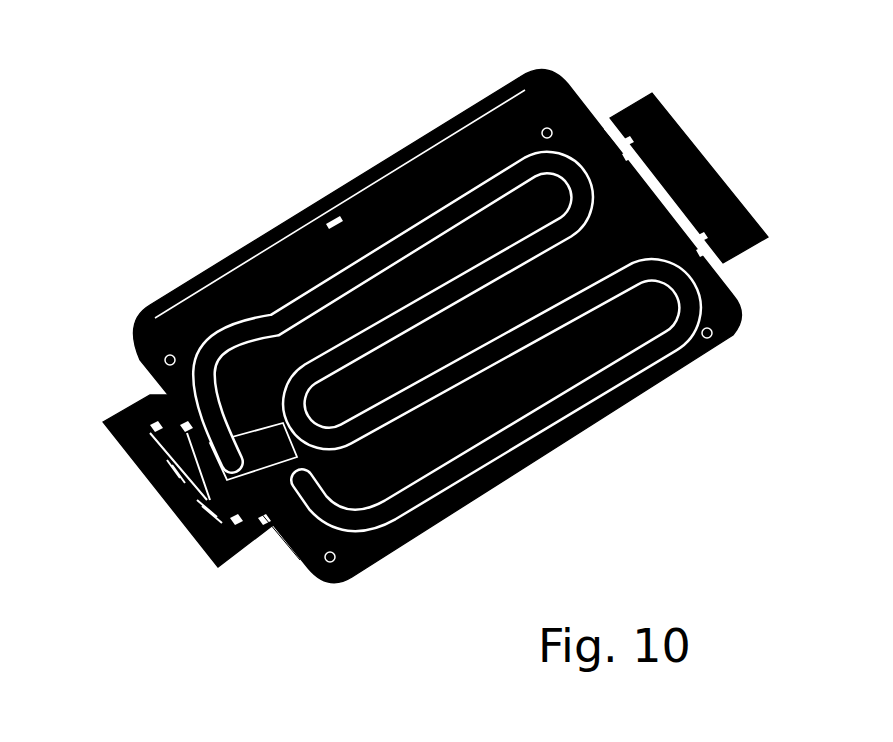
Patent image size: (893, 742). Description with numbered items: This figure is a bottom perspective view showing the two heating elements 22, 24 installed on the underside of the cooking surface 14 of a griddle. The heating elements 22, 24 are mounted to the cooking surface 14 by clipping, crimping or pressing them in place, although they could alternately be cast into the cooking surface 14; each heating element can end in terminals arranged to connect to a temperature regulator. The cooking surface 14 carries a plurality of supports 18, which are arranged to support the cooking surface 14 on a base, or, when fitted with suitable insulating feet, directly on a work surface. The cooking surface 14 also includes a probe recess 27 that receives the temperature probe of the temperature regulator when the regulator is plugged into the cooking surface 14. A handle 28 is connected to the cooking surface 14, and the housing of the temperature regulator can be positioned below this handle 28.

The cooking surface 14 is at (243, 247).
The supports 18 is at (567, 92).
The heating element 22 is at (472, 108).
The heating element 24 is at (382, 167).
The probe recess 27 is at (287, 553).
The handle 28 is at (137, 473).